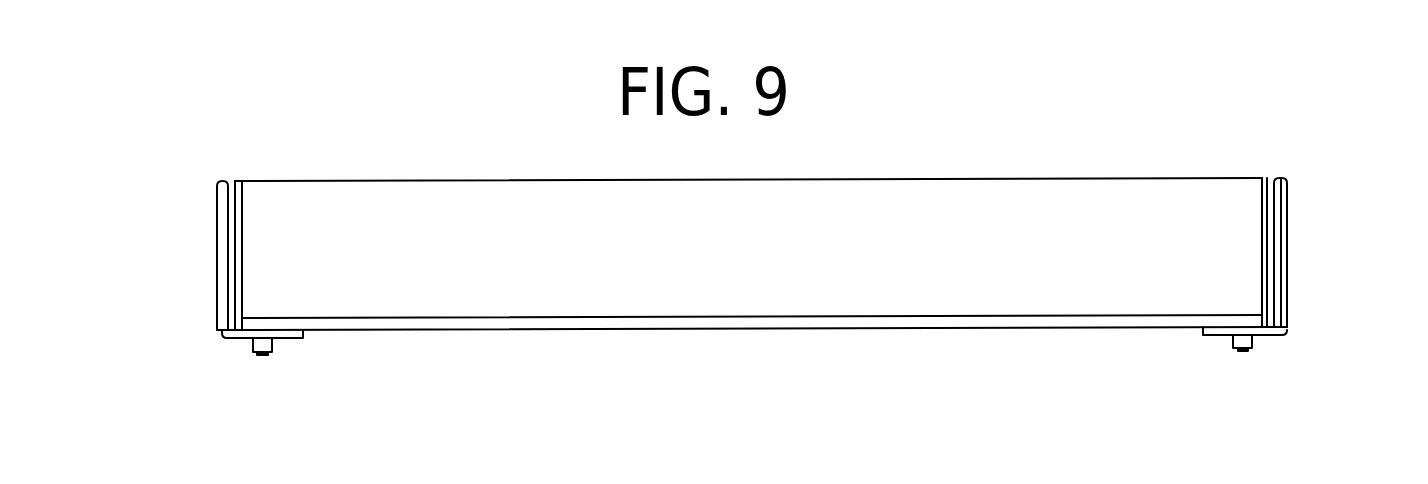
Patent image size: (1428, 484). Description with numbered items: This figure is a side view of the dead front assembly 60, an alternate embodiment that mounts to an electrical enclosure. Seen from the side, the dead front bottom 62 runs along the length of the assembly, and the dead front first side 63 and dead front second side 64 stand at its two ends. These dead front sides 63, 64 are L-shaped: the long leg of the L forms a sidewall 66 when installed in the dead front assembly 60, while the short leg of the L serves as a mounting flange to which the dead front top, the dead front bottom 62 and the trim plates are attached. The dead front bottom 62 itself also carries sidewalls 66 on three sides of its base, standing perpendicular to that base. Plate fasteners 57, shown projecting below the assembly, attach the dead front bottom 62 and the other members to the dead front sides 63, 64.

The dead front assembly 60 is at (330, 59).
The dead front bottom 62 is at (758, 300).
The dead front first side 63 is at (1288, 180).
The dead front second side 64 is at (172, 238).
The sidewall 66 is at (215, 296).
The plate fastener 57 is at (262, 358).